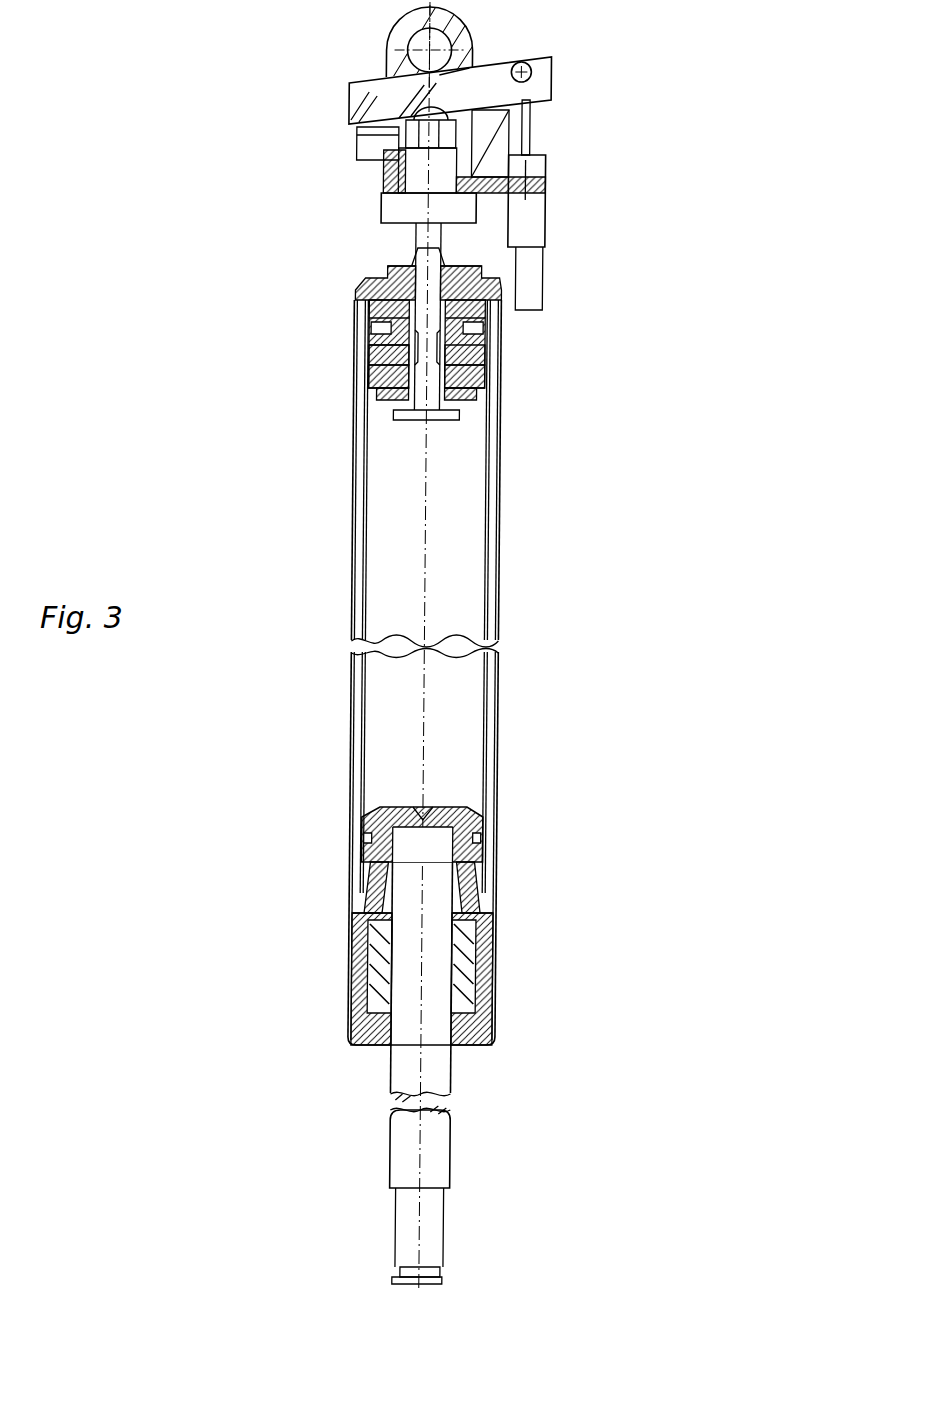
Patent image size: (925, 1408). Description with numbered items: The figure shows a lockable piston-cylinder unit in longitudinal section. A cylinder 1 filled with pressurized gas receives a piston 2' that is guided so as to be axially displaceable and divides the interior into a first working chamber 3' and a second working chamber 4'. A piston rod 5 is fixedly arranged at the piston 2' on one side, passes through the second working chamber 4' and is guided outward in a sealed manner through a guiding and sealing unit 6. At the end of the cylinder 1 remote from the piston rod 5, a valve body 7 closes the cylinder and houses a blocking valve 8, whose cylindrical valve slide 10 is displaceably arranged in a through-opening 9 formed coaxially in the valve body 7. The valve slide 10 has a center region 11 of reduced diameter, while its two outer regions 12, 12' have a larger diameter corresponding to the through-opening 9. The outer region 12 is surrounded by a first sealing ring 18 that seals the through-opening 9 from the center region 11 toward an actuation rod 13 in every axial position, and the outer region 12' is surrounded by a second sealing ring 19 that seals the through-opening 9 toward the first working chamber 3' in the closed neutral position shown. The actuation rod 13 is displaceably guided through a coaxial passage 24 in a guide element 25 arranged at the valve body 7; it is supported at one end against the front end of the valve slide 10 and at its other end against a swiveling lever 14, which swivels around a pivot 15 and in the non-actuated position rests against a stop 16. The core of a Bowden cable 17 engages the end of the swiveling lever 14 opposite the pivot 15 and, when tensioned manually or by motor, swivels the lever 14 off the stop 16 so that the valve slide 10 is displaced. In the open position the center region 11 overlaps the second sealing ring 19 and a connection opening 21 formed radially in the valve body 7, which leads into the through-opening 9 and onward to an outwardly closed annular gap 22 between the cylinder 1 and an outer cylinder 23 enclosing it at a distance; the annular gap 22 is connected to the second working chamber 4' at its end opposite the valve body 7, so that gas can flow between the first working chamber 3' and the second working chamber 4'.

The cylinder 1 is at (505, 573).
The piston 2' is at (521, 815).
The first working chamber 3' is at (537, 730).
The second working chamber 4' is at (532, 880).
The piston rod 5 is at (450, 1135).
The guiding and sealing unit 6 is at (503, 968).
The valve body 7 is at (364, 283).
The blocking valve 8 is at (358, 352).
The through-opening 9 is at (504, 405).
The valve slide 10 is at (358, 340).
The center region 11 is at (358, 370).
The outer region 12 is at (331, 224).
The outer region 12' is at (323, 449).
The actuation rod 13 is at (361, 137).
The swiveling lever 14 is at (479, 103).
The pivot 15 is at (353, 101).
The stop 16 is at (454, 90).
The Bowden cable 17 is at (547, 268).
The first sealing ring 18 is at (503, 320).
The second sealing ring 19 is at (503, 375).
The connection opening 21 is at (503, 347).
The annular gap 22 is at (368, 562).
The outer cylinder 23 is at (356, 712).
The coaxial passage 24 is at (442, 260).
The guide element 25 is at (402, 245).